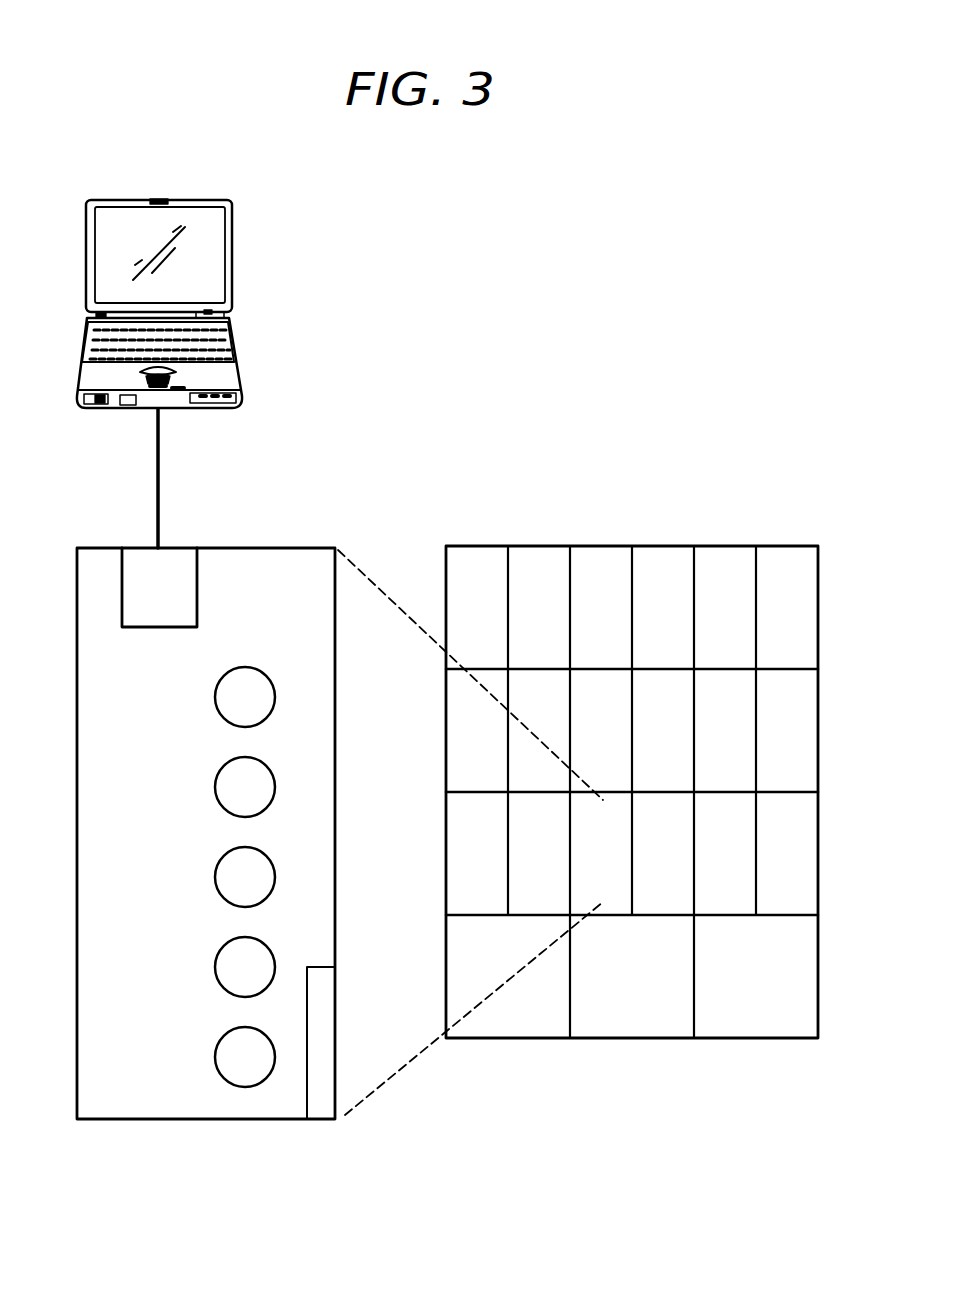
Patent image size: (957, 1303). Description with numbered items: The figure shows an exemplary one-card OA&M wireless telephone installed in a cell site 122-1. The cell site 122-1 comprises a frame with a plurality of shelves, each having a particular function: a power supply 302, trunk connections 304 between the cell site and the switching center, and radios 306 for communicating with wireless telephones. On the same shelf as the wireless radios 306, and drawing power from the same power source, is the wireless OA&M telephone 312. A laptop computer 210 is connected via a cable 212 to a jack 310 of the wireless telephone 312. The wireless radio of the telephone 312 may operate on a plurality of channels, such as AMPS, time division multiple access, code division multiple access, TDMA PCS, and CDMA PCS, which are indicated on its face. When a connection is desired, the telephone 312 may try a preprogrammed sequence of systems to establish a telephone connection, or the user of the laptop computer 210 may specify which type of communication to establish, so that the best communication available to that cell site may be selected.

The laptop computer 210 is at (188, 198).
The cable 212 is at (157, 465).
The wireless OA&M telephone 312 is at (255, 546).
The jack 310 is at (199, 588).
The cell site 122-1 is at (633, 546).
The trunk connections 304 is at (819, 735).
The radios 306 is at (819, 856).
The power supply 302 is at (819, 978).